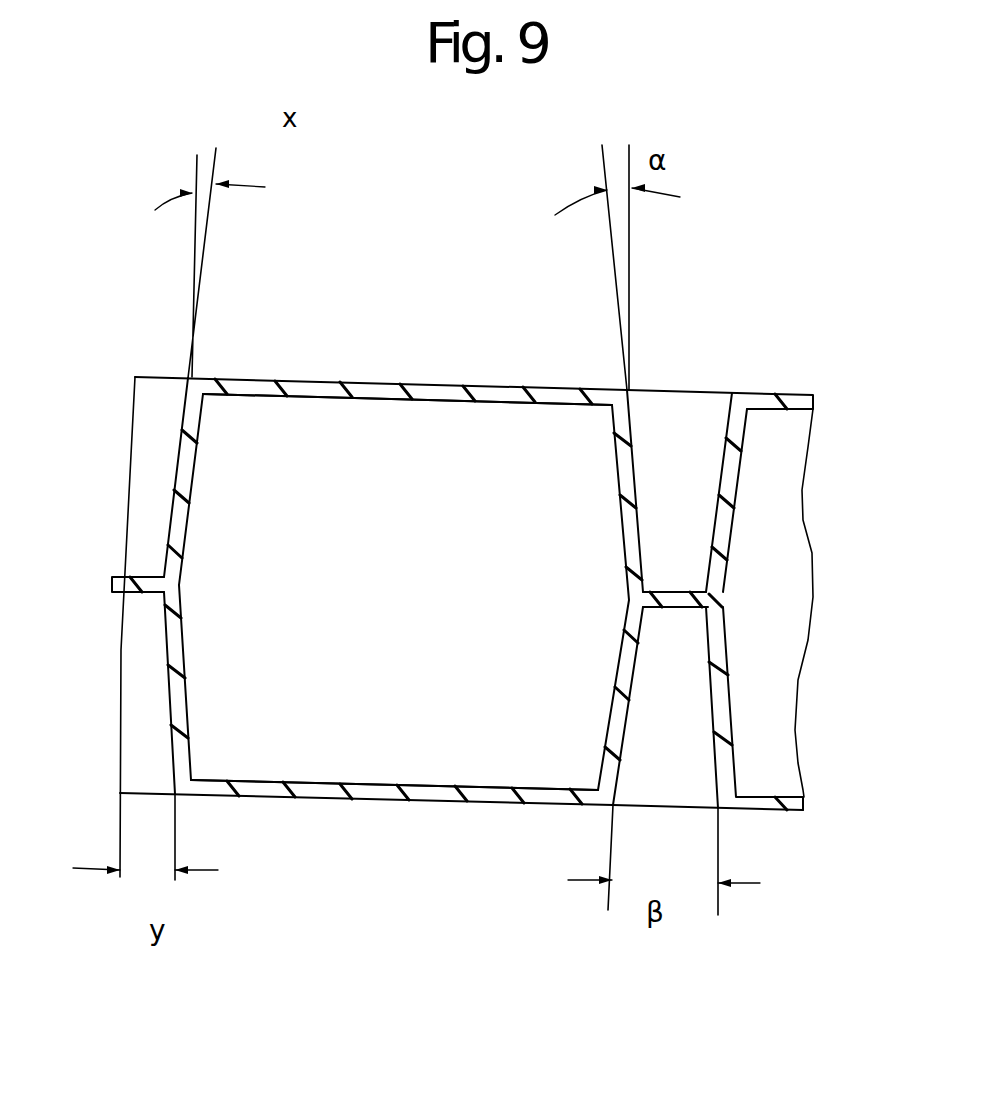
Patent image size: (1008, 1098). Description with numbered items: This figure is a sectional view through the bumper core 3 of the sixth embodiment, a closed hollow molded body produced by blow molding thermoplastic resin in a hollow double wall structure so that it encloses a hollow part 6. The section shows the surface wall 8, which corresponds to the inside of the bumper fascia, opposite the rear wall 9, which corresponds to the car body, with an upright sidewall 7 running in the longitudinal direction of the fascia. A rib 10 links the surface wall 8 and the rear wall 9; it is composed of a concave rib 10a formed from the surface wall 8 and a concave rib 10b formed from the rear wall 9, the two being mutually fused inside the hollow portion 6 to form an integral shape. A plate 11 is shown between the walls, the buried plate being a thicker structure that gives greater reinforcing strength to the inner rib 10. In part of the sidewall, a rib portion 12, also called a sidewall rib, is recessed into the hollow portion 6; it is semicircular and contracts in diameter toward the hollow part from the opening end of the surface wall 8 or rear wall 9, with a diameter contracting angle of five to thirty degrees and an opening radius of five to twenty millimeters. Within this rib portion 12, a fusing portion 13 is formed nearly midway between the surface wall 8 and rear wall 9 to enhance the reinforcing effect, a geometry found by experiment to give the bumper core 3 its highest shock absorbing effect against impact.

The bumper core 3 is at (318, 330).
The hollow part 6 is at (382, 702).
The upright sidewall 7 is at (132, 440).
The surface wall 8 is at (405, 378).
The rear wall 9 is at (495, 806).
The rib 10 is at (643, 450).
The concave rib 10a is at (718, 437).
The concave rib 10b is at (712, 742).
The plate 11 is at (673, 592).
The rib portion 12 is at (172, 503).
The fusing portion 13 is at (108, 580).